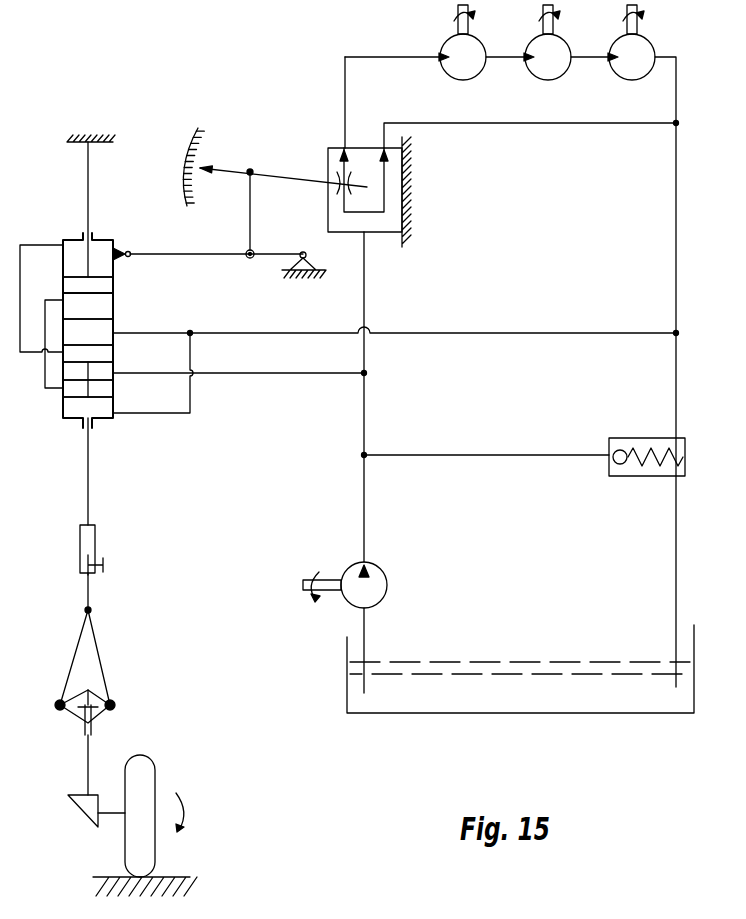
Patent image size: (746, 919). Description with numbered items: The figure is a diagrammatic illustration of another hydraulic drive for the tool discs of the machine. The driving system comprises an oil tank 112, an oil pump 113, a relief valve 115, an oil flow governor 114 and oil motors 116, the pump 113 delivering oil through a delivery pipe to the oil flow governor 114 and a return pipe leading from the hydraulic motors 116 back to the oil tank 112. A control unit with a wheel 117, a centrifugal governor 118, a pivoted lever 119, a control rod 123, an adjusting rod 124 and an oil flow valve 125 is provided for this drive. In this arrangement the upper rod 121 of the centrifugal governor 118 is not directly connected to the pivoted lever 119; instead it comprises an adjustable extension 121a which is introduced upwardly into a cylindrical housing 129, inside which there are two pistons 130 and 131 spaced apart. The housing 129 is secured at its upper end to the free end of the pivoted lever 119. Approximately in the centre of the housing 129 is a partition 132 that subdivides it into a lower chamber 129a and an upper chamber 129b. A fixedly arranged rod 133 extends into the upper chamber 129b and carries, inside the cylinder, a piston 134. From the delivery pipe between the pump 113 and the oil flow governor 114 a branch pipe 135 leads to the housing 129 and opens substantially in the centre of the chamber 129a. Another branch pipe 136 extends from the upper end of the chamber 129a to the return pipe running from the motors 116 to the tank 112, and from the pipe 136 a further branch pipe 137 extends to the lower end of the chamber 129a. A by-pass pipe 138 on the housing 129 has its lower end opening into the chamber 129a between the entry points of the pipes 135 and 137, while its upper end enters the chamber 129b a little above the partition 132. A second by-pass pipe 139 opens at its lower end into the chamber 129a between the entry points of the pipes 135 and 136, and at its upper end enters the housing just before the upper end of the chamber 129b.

The oil tank 112 is at (422, 705).
The oil pump 113 is at (383, 563).
The oil flow governor 114 is at (333, 150).
The relief valve 115 is at (622, 472).
The oil motors 116 is at (632, 72).
The wheel 117 is at (143, 760).
The centrifugal governor 118 is at (100, 660).
The pivoted lever 119 is at (175, 242).
The upper rod 121 is at (90, 593).
The adjustable extension 121a is at (88, 495).
The control rod 123 is at (247, 227).
The adjusting rod 124 is at (272, 173).
The oil flow valve 125 is at (345, 188).
The cylindrical housing 129 is at (63, 242).
The lower chamber 129a is at (100, 410).
The upper chamber 129b is at (98, 249).
The piston 130 is at (105, 355).
The piston 131 is at (105, 389).
The partition 132 is at (100, 318).
The fixedly arranged rod 133 is at (90, 167).
The piston 134 is at (107, 283).
The branch pipe 135 is at (240, 389).
The branch pipe 136 is at (396, 342).
The branch pipe 137 is at (170, 413).
The by-pass pipe 138 is at (55, 390).
The by-pass pipe 139 is at (25, 353).